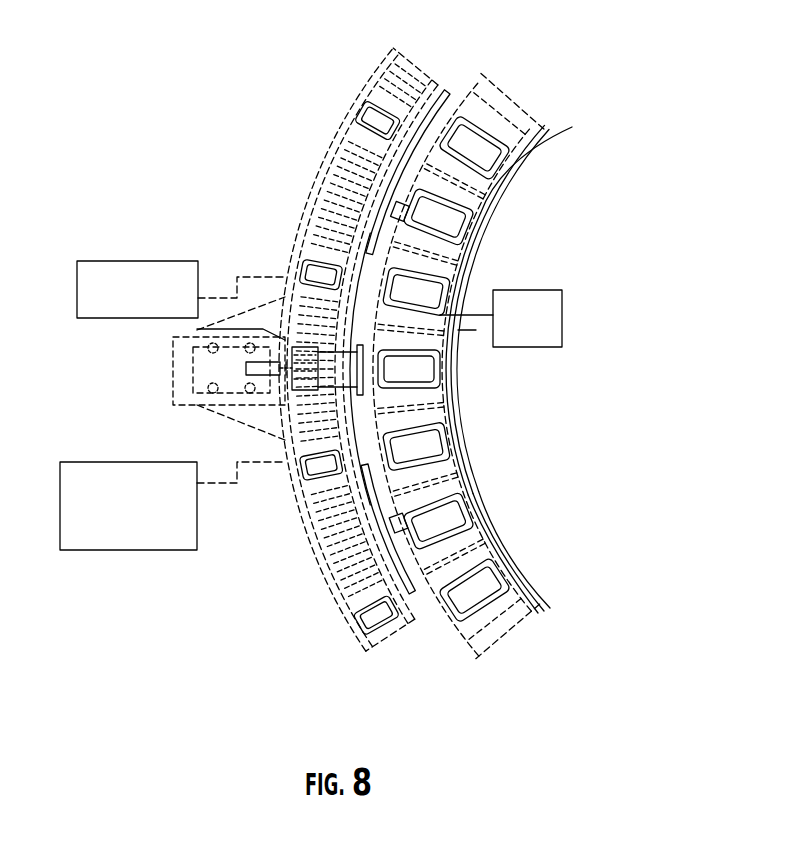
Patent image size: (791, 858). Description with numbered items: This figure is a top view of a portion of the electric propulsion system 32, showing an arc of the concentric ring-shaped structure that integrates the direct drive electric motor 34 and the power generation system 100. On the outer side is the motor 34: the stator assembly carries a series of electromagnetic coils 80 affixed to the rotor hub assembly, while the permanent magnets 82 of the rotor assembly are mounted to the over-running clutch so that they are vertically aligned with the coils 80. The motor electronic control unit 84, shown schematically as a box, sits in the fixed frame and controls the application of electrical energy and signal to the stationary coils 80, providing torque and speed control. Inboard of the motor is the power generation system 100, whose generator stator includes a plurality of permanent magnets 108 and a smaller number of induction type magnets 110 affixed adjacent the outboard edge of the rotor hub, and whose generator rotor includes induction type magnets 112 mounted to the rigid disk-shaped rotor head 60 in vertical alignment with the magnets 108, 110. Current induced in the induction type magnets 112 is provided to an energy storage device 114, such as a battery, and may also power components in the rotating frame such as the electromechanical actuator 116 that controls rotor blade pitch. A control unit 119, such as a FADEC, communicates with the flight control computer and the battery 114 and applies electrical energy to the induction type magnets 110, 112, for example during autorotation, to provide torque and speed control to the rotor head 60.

The electric propulsion system 32 is at (140, 89).
The electric motor 34 is at (540, 208).
The rotor head 60 is at (303, 237).
The electromagnetic coils 80 is at (440, 207).
The permanent magnets 82 is at (405, 402).
The motor electronic control unit 84 is at (501, 318).
The power generation system 100 is at (289, 194).
The permanent magnets 108 is at (360, 585).
The induction type magnets 110 is at (368, 108).
The induction type magnets 112 is at (333, 275).
The energy storage device 114 is at (172, 506).
The electromechanical actuator 116 is at (276, 376).
The control unit 119 is at (181, 289).